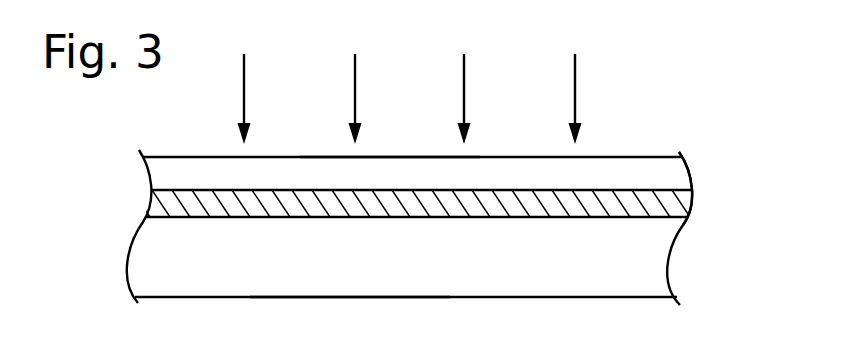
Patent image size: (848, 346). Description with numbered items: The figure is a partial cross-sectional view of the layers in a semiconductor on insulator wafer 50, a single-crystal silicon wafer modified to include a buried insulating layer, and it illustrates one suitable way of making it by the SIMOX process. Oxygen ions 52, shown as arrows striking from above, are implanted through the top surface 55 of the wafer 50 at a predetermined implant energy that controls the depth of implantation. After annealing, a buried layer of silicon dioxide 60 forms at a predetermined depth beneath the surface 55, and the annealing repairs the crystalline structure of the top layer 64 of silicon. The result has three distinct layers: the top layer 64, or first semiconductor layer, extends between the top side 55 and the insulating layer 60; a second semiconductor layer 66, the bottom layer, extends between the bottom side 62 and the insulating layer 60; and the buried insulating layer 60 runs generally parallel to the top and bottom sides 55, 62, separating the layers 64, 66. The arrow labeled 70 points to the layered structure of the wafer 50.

The semiconductor on insulator (SOI) wafer 50 is at (432, 210).
The oxygen ions 52 is at (244, 110).
The top surface 55 is at (391, 156).
The buried layer of silicon dioxide 60 is at (163, 205).
The bottom side 62 is at (330, 298).
The top layer 64 is at (164, 181).
The second semiconductor layer 66 is at (165, 265).
The structure 70 is at (675, 164).